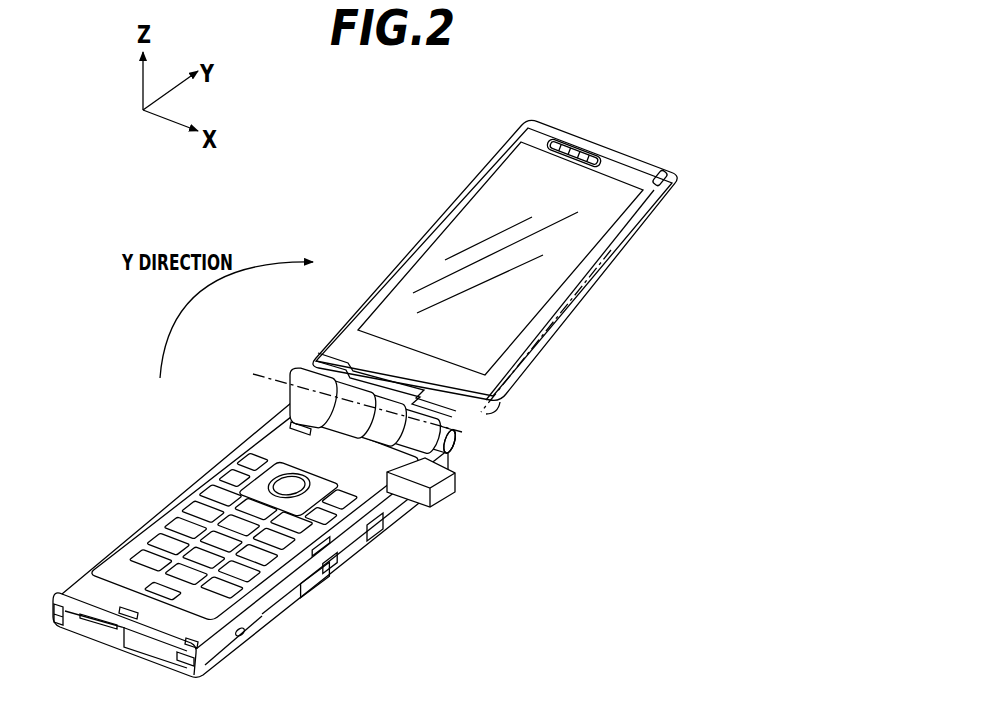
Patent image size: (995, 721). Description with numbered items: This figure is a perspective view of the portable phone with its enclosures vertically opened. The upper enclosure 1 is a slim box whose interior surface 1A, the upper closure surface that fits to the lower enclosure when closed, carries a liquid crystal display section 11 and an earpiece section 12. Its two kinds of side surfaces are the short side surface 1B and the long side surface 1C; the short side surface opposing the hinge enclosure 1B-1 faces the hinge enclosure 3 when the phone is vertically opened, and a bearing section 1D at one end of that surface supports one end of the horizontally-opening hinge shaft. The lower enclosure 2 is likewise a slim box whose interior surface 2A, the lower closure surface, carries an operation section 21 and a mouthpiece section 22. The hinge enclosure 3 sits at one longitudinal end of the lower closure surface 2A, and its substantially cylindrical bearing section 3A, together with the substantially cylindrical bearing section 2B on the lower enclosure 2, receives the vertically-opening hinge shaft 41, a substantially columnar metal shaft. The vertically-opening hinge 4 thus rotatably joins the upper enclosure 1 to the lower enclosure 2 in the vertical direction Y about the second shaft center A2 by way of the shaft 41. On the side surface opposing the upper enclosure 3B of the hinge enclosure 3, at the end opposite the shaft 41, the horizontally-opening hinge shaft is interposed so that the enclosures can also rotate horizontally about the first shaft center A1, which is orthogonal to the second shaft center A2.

The upper enclosure 1 is at (636, 233).
The interior surface of upper enclosure 1A is at (545, 135).
The short side surface 1B is at (589, 128).
The side surface opposing the hinge enclosure 1B-1 is at (457, 450).
The long side surface 1C is at (587, 300).
The bearing section 1D is at (486, 410).
The liquid crystal display section 11 is at (568, 247).
The earpiece section 12 is at (600, 161).
The lower enclosure 2 is at (280, 602).
The interior surface of lower enclosure 2A is at (287, 438).
The bearing section of lower enclosure 2B is at (306, 376).
The operation section 21 is at (270, 483).
The mouthpiece section 22 is at (124, 614).
The hinge enclosure 3 is at (433, 488).
The bearing section of hinge enclosure 3A is at (398, 389).
The side surface opposing the upper enclosure 3B is at (393, 365).
The vertically-opening hinge 4 is at (323, 385).
The vertically-opening hinge shaft 41 is at (288, 383).
The first shaft center A1 is at (537, 342).
The second shaft center A2 is at (273, 380).